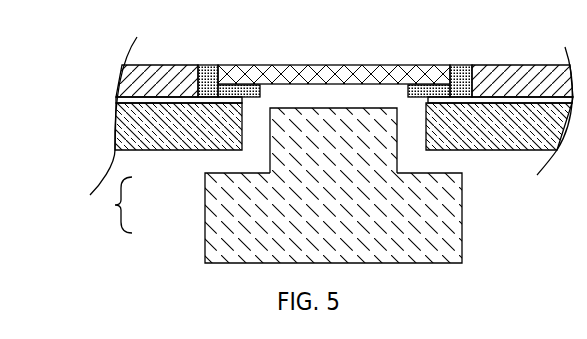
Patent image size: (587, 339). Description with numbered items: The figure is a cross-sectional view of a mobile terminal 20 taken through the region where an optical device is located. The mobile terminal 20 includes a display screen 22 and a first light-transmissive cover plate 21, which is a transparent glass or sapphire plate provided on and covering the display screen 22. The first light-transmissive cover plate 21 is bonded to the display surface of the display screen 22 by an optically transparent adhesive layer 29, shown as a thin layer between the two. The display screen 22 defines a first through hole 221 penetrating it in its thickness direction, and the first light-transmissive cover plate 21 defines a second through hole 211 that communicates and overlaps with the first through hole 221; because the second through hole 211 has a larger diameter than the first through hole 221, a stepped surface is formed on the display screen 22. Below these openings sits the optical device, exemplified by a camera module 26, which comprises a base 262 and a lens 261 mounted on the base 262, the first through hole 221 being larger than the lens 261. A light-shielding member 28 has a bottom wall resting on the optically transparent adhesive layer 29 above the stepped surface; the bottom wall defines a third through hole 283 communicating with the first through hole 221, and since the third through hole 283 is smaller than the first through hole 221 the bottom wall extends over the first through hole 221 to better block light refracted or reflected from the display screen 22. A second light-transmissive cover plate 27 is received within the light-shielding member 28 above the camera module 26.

The mobile terminal 20 is at (100, 70).
The first light-transmissive cover plate 21 is at (525, 63).
The display screen 22 is at (118, 127).
The camera module 26 is at (111, 205).
The second light-transmissive cover plate 27 is at (358, 63).
The light-shielding member 28 is at (464, 63).
The optically transparent adhesive layer 29 is at (118, 100).
The second through hole 211 is at (217, 63).
The first through hole 221 is at (416, 130).
The lens 261 is at (269, 152).
The base 262 is at (203, 218).
The third through hole 283 is at (263, 91).